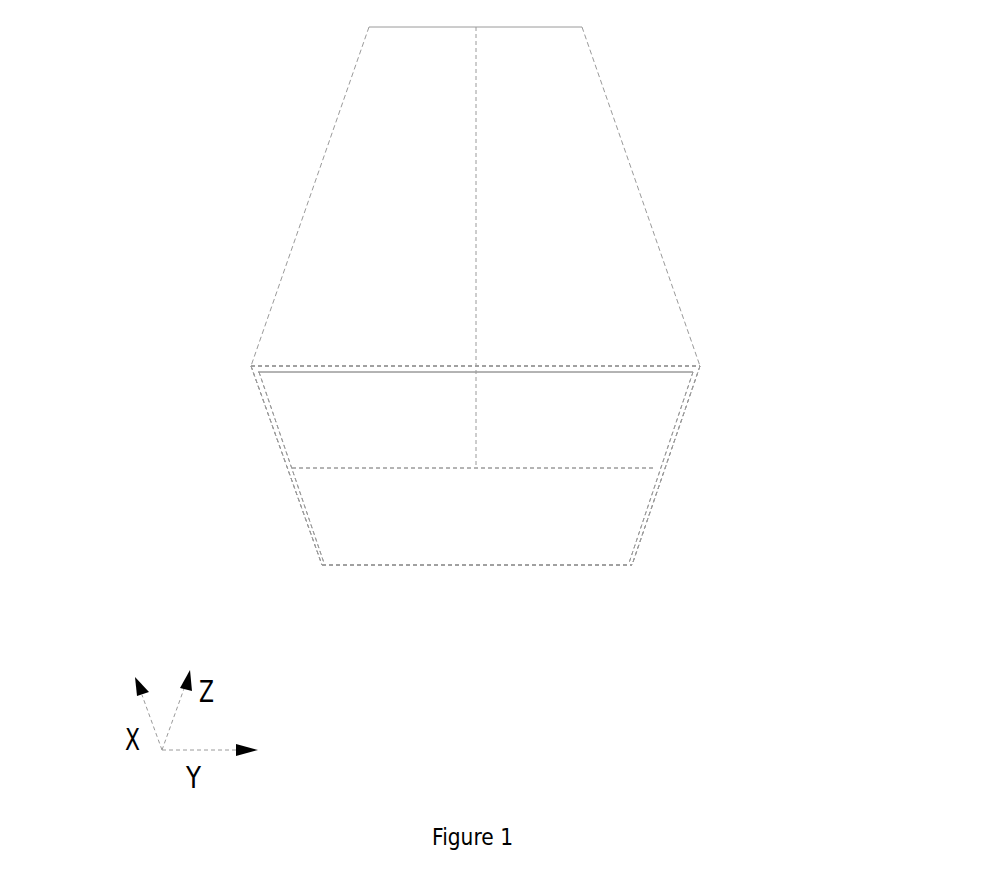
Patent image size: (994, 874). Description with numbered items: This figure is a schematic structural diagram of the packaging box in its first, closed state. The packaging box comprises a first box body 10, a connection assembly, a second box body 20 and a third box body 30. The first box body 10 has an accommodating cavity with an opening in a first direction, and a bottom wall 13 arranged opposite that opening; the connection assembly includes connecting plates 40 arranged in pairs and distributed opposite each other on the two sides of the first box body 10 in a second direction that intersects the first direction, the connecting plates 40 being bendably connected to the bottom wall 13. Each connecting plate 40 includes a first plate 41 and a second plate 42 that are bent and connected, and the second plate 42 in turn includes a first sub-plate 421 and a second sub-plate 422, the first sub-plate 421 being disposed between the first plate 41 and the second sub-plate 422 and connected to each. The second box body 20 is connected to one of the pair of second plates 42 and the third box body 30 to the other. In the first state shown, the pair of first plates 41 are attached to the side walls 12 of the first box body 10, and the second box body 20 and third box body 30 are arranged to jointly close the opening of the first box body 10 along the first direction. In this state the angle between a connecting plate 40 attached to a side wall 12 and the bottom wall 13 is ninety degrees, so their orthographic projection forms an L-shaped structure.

The first box body 10 is at (535, 612).
The side wall 12 is at (318, 543).
The bottom wall 13 is at (378, 567).
The second box body 20 is at (285, 163).
The third box body 30 is at (683, 190).
The connecting plate 40 is at (100, 497).
The first plate 41 is at (300, 503).
The second plate 42 is at (140, 352).
The first sub-plate 421 is at (268, 417).
The second sub-plate 422 is at (318, 334).